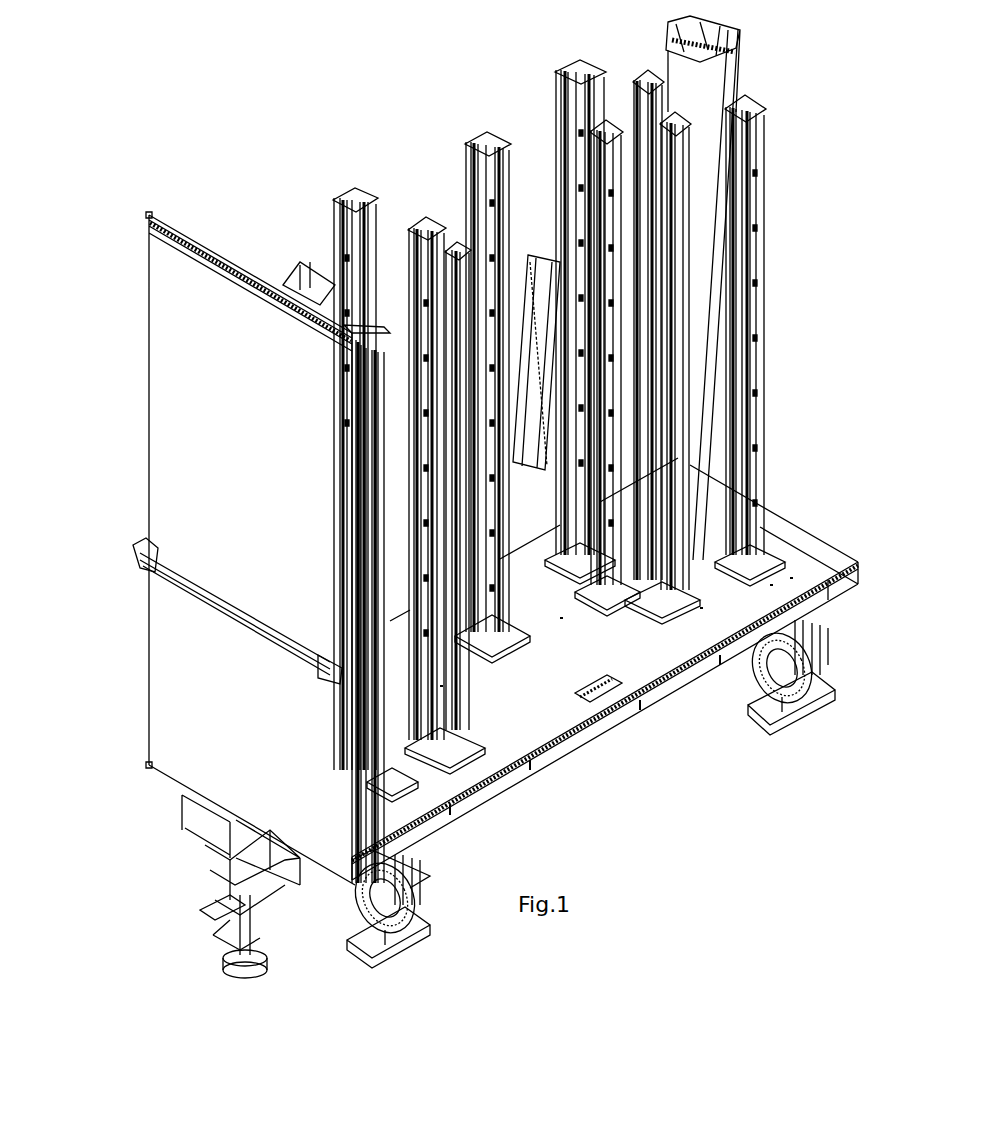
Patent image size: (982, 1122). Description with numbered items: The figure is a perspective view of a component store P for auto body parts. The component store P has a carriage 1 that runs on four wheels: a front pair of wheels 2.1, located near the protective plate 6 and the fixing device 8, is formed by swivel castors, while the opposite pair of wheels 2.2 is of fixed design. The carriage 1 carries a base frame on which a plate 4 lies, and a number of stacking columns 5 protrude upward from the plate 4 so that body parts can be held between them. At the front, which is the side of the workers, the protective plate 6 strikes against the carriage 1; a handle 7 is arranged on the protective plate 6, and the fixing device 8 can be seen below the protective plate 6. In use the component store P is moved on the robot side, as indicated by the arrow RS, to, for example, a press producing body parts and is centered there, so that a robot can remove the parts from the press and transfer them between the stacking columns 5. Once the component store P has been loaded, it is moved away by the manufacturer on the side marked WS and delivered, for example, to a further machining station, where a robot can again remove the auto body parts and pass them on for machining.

The carriage 1 is at (670, 707).
The front pair of wheels 2.1 is at (395, 940).
The opposite pair of wheels 2.2 is at (787, 700).
The plate 4 is at (513, 737).
The stacking columns 5 is at (762, 196).
The protective plate 6 is at (180, 407).
The handle 7 is at (150, 565).
The fixing device 8 is at (232, 868).
The component store P is at (793, 334).
The manufacturer side WS is at (135, 650).
The robot side RS is at (783, 451).